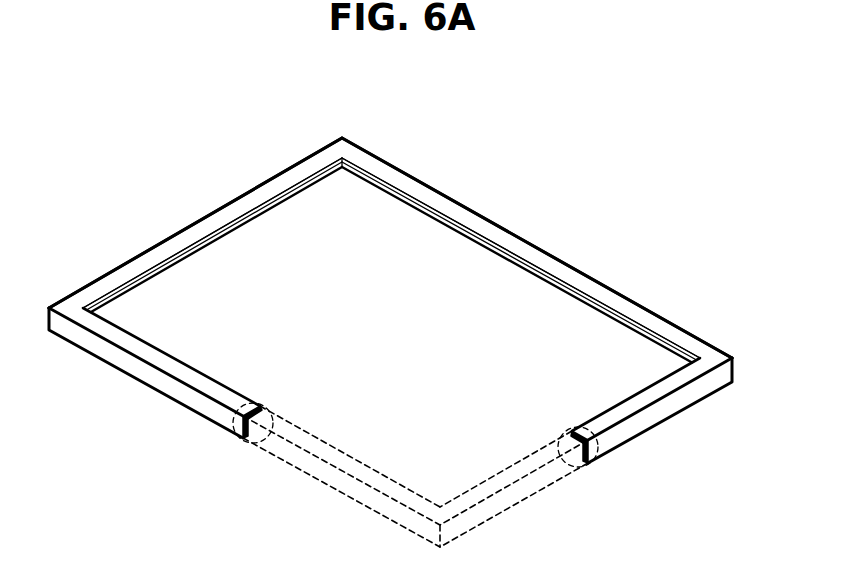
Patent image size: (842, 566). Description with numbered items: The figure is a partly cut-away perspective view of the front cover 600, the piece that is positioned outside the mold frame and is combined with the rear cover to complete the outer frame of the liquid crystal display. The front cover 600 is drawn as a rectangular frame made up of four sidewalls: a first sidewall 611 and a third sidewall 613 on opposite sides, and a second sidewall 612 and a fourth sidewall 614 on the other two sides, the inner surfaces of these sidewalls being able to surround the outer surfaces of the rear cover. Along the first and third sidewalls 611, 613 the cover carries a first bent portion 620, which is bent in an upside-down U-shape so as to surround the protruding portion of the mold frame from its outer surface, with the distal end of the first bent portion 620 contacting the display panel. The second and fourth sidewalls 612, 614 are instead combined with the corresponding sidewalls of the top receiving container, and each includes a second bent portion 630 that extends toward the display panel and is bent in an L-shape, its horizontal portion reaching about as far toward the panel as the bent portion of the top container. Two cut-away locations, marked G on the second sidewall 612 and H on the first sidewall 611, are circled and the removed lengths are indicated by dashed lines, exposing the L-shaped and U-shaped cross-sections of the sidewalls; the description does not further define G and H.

The front cover 600 is at (640, 126).
The first sidewall 611 is at (648, 415).
The second sidewall 612 is at (143, 373).
The third sidewall 613 is at (128, 271).
The fourth sidewall 614 is at (533, 278).
The first bent portion 620 is at (212, 238).
The second bent portion 630 is at (483, 233).
The cut portion G is at (258, 400).
The cut portion H is at (603, 450).